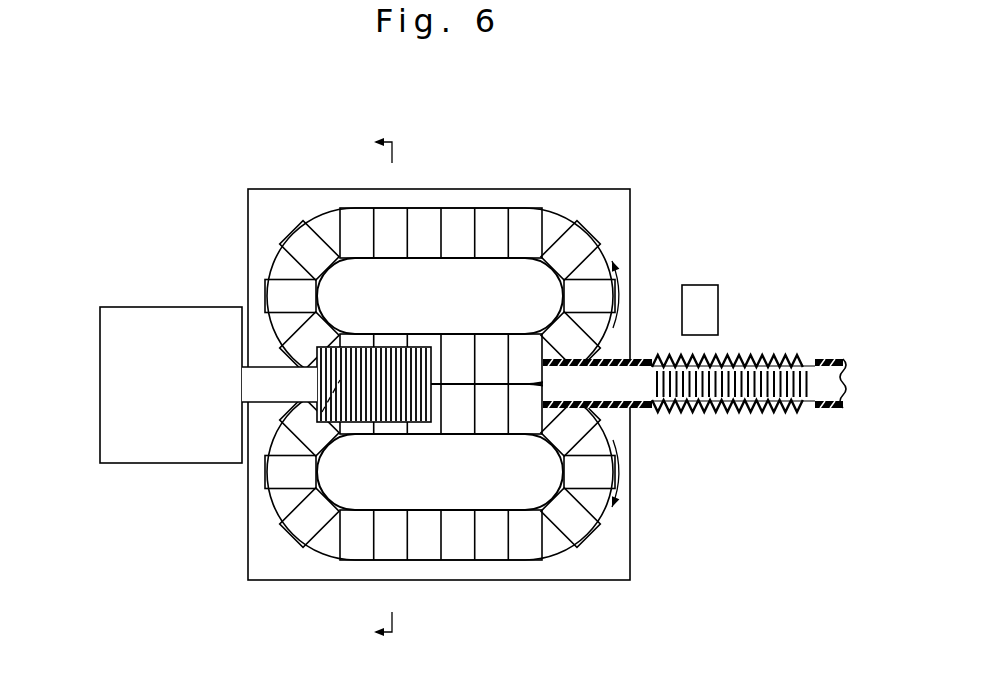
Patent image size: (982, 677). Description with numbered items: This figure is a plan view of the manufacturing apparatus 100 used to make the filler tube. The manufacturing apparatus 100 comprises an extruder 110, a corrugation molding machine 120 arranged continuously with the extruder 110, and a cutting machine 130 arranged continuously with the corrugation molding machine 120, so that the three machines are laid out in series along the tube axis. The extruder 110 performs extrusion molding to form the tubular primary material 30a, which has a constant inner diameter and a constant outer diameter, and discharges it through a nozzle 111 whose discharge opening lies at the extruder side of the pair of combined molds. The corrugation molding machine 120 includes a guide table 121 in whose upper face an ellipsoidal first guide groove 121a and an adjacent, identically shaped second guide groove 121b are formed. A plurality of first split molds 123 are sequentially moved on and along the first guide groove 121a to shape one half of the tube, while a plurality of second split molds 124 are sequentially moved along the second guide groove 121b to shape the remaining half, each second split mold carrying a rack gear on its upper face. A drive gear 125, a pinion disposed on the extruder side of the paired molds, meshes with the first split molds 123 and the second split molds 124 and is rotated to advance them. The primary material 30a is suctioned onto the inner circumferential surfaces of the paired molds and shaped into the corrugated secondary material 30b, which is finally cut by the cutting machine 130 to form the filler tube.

The manufacturing apparatus 100 is at (779, 145).
The extruder 110 is at (156, 302).
The nozzle 111 is at (263, 363).
The corrugation molding machine 120 is at (599, 185).
The guide table 121 is at (415, 375).
The first guide groove 121a is at (320, 222).
The second guide groove 121b is at (318, 543).
The first split molds 123 is at (424, 216).
The second split molds 124 is at (420, 548).
The drive gear 125 is at (362, 422).
The cutting machine 130 is at (707, 280).
The primary material 30a is at (336, 398).
The secondary material 30b is at (781, 351).